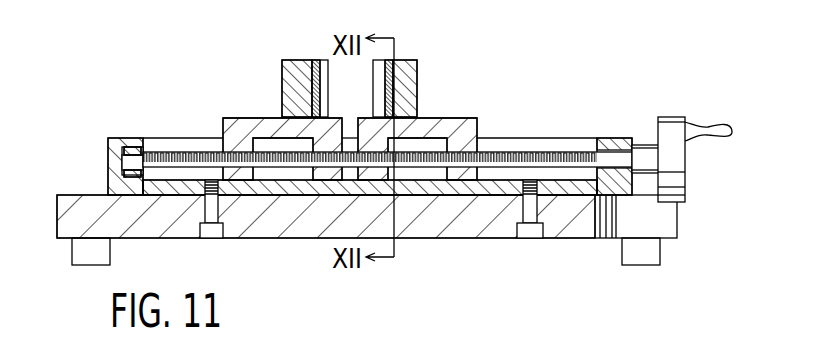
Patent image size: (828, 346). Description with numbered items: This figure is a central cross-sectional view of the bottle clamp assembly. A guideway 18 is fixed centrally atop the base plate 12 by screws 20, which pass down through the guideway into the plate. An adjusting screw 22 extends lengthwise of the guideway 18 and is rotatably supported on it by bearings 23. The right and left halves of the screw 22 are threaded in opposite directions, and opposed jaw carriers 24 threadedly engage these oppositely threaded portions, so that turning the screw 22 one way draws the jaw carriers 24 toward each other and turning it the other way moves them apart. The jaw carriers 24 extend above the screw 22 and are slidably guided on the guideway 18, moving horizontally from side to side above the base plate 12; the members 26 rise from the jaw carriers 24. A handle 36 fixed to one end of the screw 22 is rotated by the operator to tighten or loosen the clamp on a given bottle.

The base plate 12 is at (137, 230).
The guideway 18 is at (115, 167).
The screws 20 is at (212, 238).
The adjusting screw 22 is at (170, 157).
The bearings 23 is at (140, 146).
The jaw carriers 24 is at (232, 128).
The upright clamp members 26 is at (285, 78).
The handle 36 is at (670, 120).